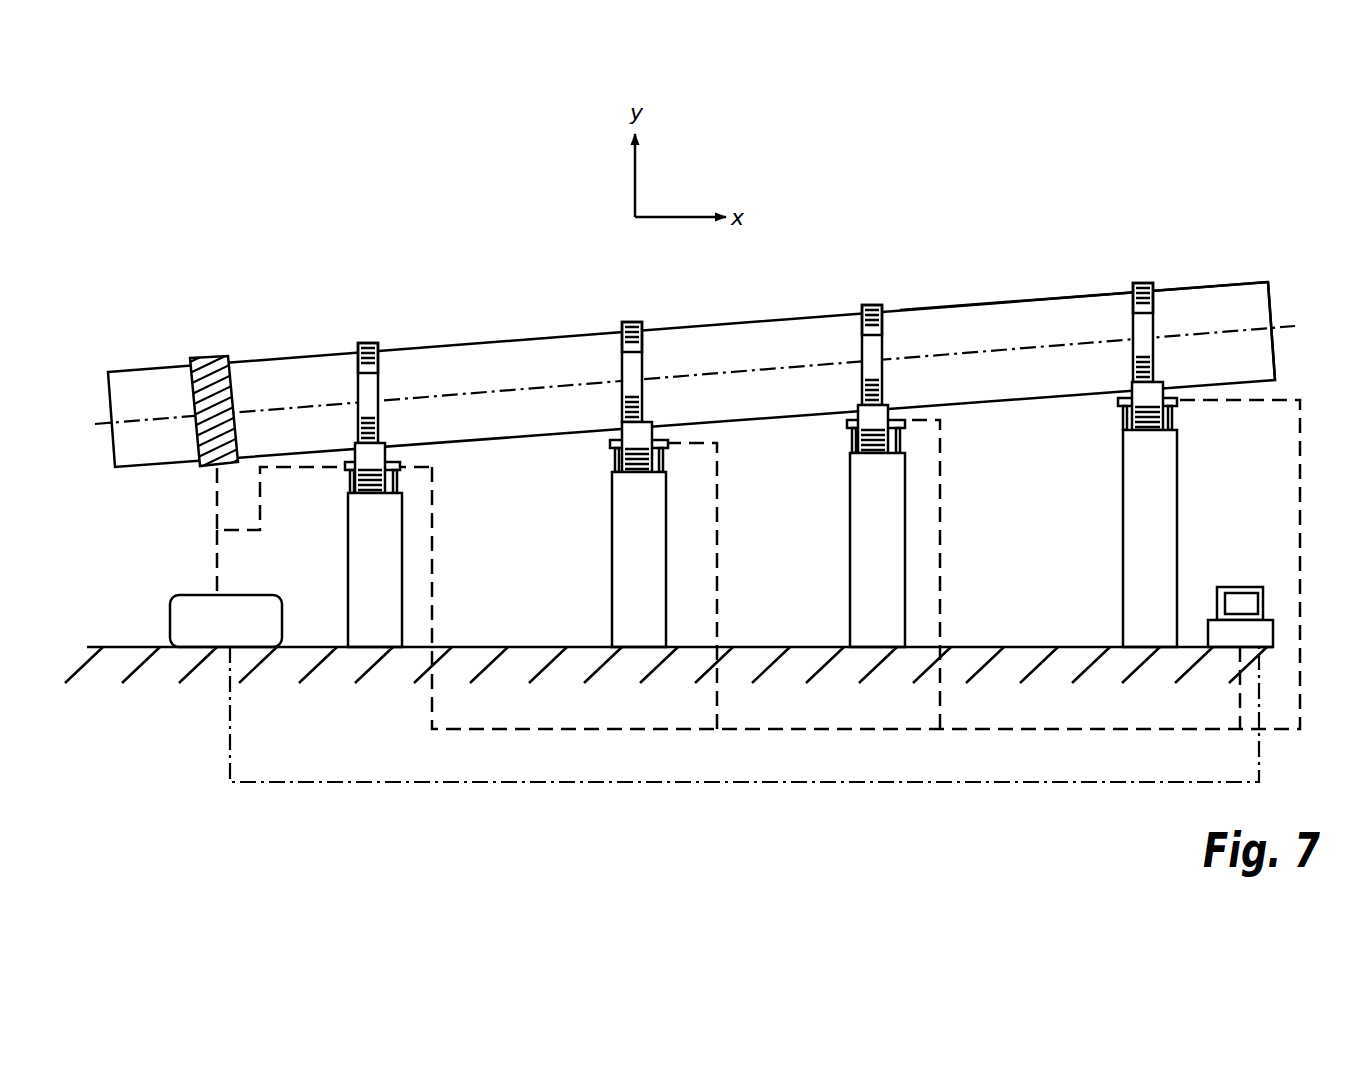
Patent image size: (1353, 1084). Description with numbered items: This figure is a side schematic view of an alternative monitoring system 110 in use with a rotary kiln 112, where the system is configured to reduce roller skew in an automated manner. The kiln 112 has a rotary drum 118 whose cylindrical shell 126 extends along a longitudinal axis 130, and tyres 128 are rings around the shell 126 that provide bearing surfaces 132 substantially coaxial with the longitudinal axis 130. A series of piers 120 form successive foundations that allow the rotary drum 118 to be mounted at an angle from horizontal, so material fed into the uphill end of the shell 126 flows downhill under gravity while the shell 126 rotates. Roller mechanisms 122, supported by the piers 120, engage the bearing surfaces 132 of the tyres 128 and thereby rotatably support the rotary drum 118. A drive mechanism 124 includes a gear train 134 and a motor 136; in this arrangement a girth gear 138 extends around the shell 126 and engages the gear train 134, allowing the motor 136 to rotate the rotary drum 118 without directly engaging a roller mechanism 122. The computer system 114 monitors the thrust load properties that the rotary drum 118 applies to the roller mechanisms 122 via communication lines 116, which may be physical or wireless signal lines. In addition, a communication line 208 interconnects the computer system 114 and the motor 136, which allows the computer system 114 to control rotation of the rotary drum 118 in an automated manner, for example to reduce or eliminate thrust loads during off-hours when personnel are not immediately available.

The monitoring system 110 is at (1114, 808).
The kiln 112 is at (510, 306).
The computer system 114 is at (1223, 587).
The communication lines 116 is at (632, 740).
The rotary drum 118 is at (1236, 280).
The piers 120 is at (363, 621).
The roller mechanisms 122 is at (342, 481).
The drive mechanism 124 is at (191, 522).
The shell 126 is at (1046, 298).
The tyres 128 is at (353, 373).
The longitudinal axis 130 is at (136, 416).
The bearing surfaces 132 is at (372, 378).
The gear train 134 is at (219, 553).
The motor 136 is at (177, 596).
The girth gear 138 is at (219, 356).
The communication line 208 is at (718, 784).